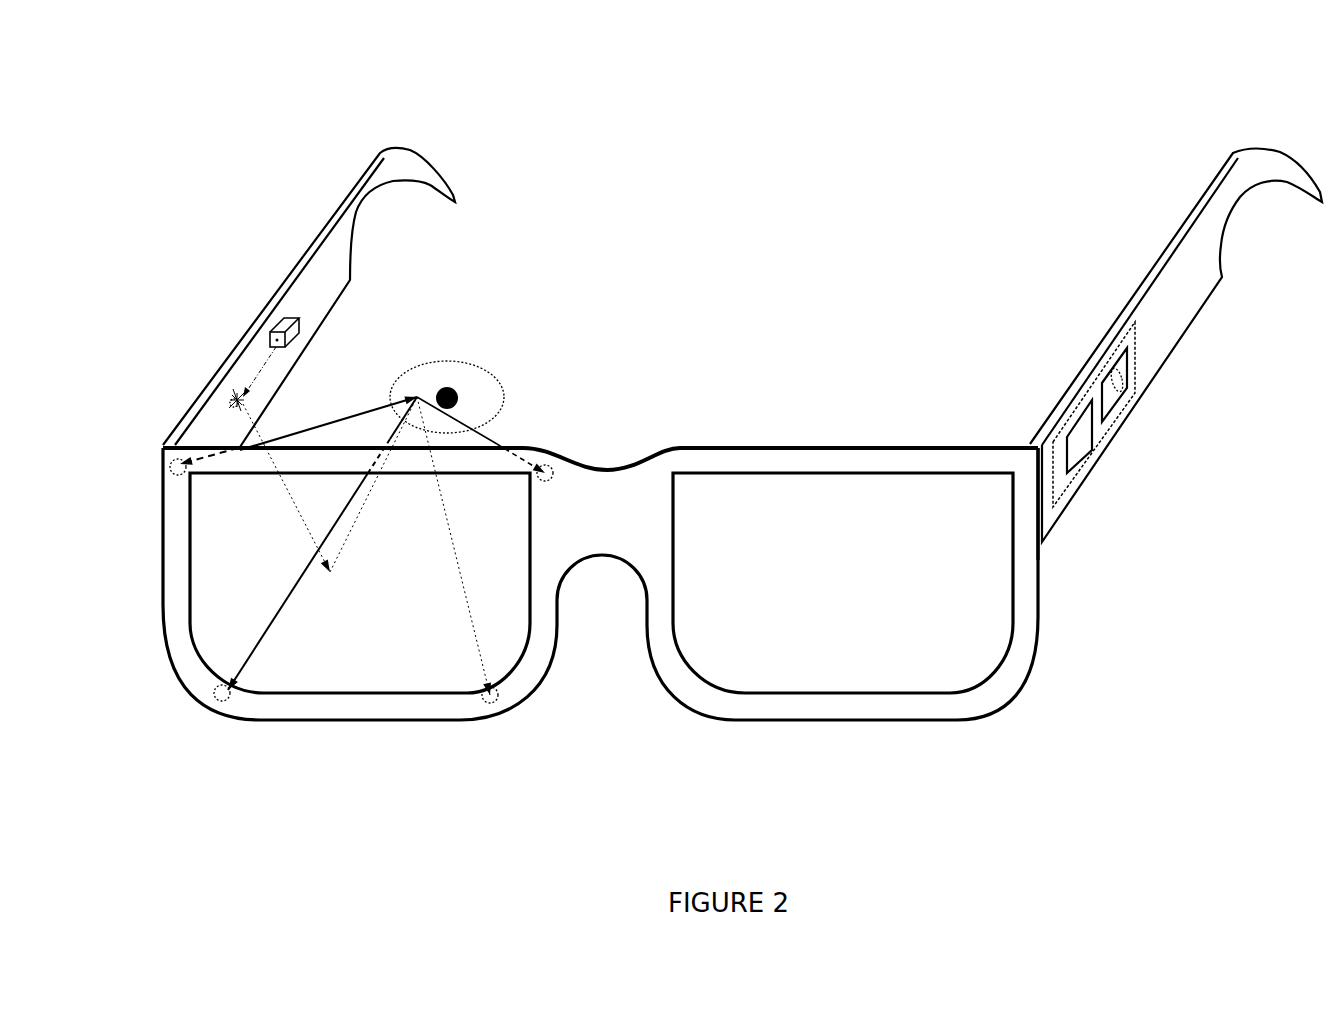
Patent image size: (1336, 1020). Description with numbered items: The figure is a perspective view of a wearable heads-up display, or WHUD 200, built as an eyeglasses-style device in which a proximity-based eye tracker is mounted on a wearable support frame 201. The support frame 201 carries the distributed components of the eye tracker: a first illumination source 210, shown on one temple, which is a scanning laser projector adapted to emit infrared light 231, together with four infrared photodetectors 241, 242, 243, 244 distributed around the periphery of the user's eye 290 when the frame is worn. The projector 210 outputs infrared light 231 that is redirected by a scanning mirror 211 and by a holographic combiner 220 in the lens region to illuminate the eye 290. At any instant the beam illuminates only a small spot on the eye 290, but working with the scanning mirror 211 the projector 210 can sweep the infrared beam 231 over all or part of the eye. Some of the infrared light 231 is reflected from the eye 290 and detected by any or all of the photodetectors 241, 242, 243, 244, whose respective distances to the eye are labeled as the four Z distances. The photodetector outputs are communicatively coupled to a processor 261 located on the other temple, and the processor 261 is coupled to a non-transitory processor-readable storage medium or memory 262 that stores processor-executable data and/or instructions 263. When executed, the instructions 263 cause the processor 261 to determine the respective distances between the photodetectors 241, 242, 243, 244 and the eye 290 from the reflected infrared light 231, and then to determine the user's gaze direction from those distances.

The WHUD 200 is at (177, 113).
The support frame 201 is at (623, 531).
The first illumination source 210 is at (288, 320).
The scanning mirror 211 is at (230, 405).
The holographic combiner 220 is at (372, 661).
The infrared light 231 is at (288, 498).
The infrared photodetector 241 is at (551, 462).
The infrared photodetector 242 is at (497, 700).
The infrared photodetector 243 is at (222, 697).
The infrared photodetector 244 is at (170, 468).
The processor 261 is at (1080, 445).
The non-transitory processor-readable storage medium 262 is at (1112, 402).
The processor-executable data and/or instructions 263 is at (1121, 385).
The eye 290 is at (475, 383).